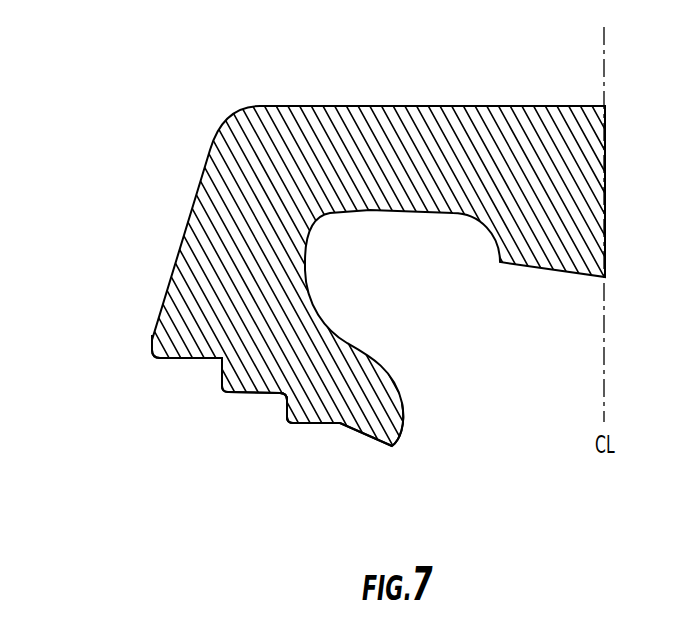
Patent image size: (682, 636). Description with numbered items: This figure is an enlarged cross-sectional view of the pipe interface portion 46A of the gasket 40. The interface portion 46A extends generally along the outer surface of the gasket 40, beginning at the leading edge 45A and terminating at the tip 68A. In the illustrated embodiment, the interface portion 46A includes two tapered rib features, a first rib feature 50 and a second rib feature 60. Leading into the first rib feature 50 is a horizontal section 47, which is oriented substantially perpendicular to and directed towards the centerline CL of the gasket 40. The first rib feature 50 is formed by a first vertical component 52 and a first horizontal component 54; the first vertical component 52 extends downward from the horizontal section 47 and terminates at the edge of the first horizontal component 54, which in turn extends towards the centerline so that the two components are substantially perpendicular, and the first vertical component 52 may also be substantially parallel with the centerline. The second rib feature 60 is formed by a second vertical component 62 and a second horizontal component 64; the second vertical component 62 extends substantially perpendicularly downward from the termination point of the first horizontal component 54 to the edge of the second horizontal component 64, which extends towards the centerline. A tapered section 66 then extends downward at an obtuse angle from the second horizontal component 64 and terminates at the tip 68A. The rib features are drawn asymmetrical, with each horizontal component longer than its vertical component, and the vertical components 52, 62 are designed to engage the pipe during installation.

The gasket 40 is at (467, 92).
The leading edge 45A is at (155, 358).
The horizontal section 47 is at (173, 359).
The first vertical component 52 is at (220, 370).
The first rib feature 50 is at (172, 410).
The first horizontal component 54 is at (235, 394).
The second vertical component 62 is at (282, 410).
The second rib feature 60 is at (282, 437).
The second horizontal component 64 is at (323, 427).
The tapered section 66 is at (372, 440).
The tip 68A is at (393, 447).
The pipe interface portion 46A is at (106, 509).